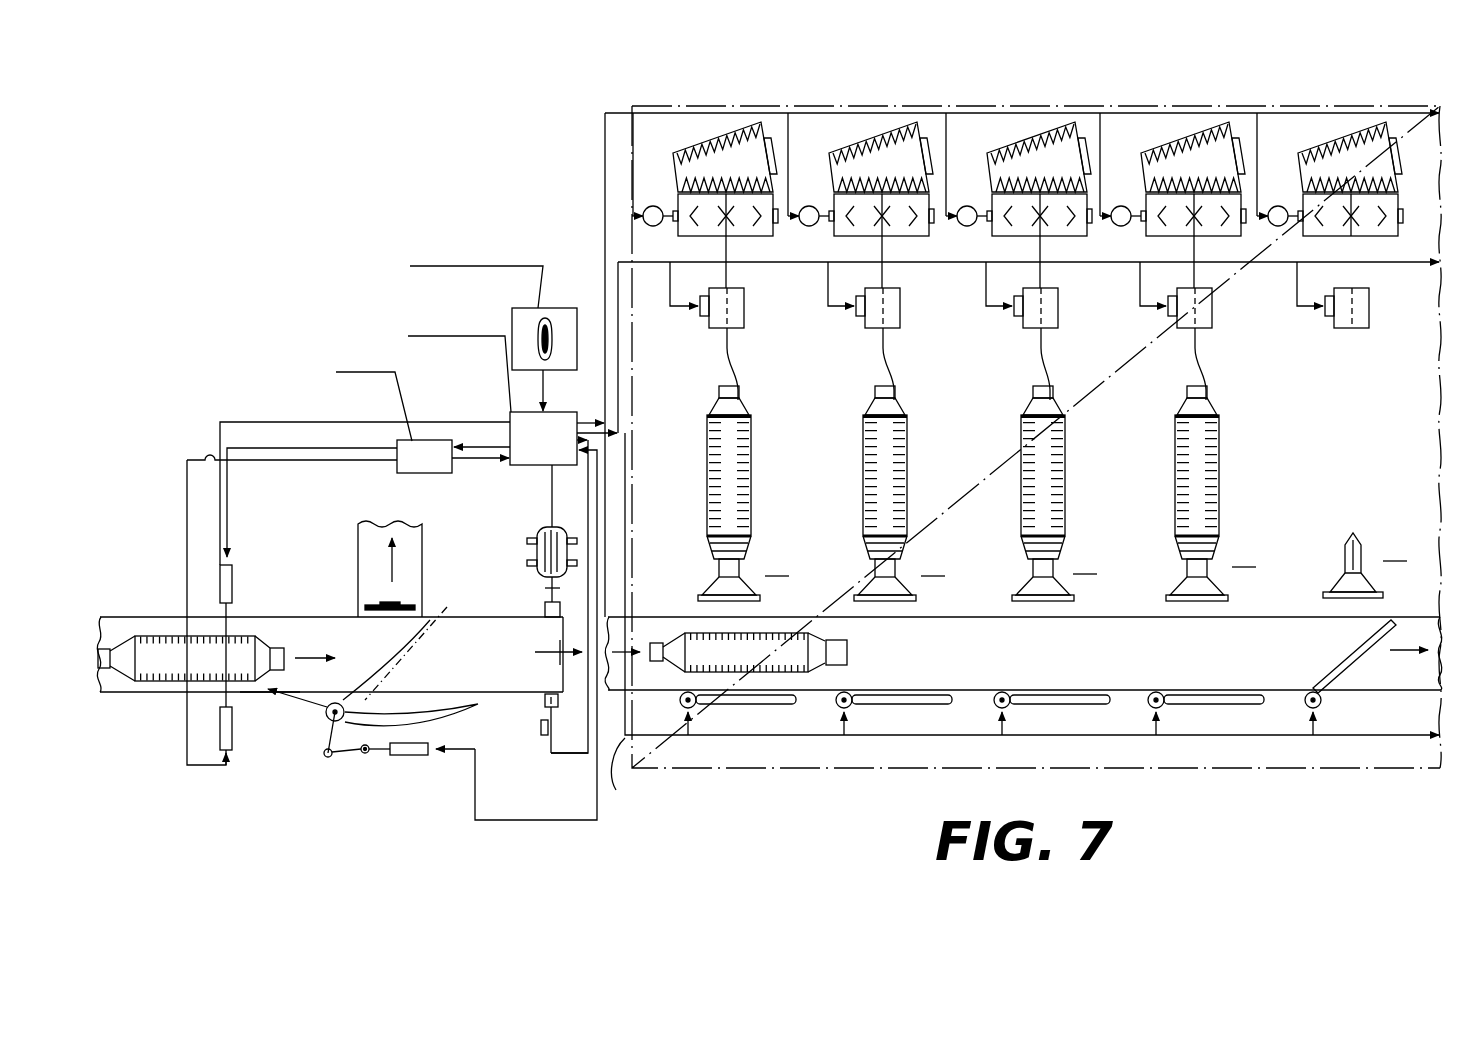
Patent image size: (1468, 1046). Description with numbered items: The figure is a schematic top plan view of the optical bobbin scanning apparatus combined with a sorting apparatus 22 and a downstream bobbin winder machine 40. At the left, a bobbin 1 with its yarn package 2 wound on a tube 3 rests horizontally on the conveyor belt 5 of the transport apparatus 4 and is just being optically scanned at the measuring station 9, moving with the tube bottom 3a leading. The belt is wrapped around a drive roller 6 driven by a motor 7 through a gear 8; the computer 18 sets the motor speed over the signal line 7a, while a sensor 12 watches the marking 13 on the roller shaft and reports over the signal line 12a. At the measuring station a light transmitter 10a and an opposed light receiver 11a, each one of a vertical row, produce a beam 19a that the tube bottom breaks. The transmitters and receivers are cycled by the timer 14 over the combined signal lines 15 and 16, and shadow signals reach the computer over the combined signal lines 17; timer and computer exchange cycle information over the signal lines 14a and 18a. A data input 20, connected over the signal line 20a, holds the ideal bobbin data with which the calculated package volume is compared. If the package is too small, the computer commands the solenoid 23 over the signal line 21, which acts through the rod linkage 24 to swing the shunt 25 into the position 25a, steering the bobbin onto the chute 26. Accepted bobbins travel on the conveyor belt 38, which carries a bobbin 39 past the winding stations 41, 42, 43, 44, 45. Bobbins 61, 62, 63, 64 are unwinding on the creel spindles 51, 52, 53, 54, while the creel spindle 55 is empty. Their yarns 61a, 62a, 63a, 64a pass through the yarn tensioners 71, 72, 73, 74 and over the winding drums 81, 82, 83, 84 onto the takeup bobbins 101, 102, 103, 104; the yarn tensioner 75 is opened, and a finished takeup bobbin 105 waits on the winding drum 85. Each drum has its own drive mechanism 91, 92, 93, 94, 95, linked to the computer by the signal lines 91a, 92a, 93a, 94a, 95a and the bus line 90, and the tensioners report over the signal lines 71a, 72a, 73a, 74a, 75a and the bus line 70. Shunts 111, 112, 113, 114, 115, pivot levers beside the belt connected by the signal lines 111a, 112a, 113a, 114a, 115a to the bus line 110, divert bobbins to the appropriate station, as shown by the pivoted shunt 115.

The bobbin 1 is at (241, 631).
The yarn package 2 is at (195, 658).
The tube 3 is at (112, 646).
The tube bottom 3a is at (289, 647).
The transport apparatus 4 is at (573, 695).
The conveyor belt 5 is at (152, 618).
The drive roller 6 is at (560, 613).
The motor 7 is at (561, 538).
The signal line 7a is at (553, 500).
The gear 8 is at (545, 589).
The measuring station 9 is at (266, 695).
The light transmitter 10a is at (233, 730).
The light receiver 11a is at (238, 584).
The sensor 12 is at (541, 736).
The signal line 12a is at (574, 755).
The marking 13 is at (545, 706).
The timer 14 is at (397, 471).
The signal line 14a is at (482, 461).
The combined signal lines 15 is at (187, 488).
The combined signal lines 16 is at (229, 522).
The combined signal lines 17 is at (362, 421).
The computer 18 is at (564, 418).
The signal line 18a is at (473, 443).
The beam 19a is at (221, 705).
The data input 20 is at (520, 309).
The signal line 20a is at (542, 389).
The signal line 21 is at (474, 814).
The sorting apparatus 22 is at (316, 702).
The solenoid 23 is at (407, 755).
The rod linkage 24 is at (334, 760).
The shunt 25 is at (470, 708).
The shunt position 25a is at (412, 644).
The chute 26 is at (416, 557).
The conveyor belt 38 is at (649, 621).
The bobbin 39 is at (857, 651).
The bobbin winder machine 40 is at (728, 782).
The winding station 41 is at (777, 565).
The winding station 42 is at (933, 565).
The winding station 43 is at (1085, 563).
The winding station 44 is at (1244, 556).
The winding station 45 is at (1368, 562).
The creel spindle 51 is at (760, 599).
The creel spindle 52 is at (916, 599).
The creel spindle 53 is at (1074, 599).
The creel spindle 54 is at (1228, 599).
The creel spindle 55 is at (1383, 597).
The bobbin 61 is at (742, 512).
The bobbin 62 is at (898, 505).
The bobbin 63 is at (1056, 500).
The bobbin 64 is at (1210, 485).
The yarn 61a is at (739, 388).
The yarn 62a is at (895, 388).
The yarn 63a is at (1041, 362).
The yarn 64a is at (1194, 362).
The bus line 70 is at (619, 352).
The yarn tensioner 71 is at (744, 327).
The yarn tensioner 72 is at (900, 327).
The yarn tensioner 73 is at (1058, 327).
The yarn tensioner 74 is at (1212, 327).
The yarn tensioner 75 is at (1369, 327).
The signal line 71a is at (668, 292).
The signal line 72a is at (828, 280).
The signal line 73a is at (986, 280).
The signal line 74a is at (1140, 280).
The signal line 75a is at (1297, 280).
The winding drum 81 is at (770, 237).
The winding drum 82 is at (926, 237).
The winding drum 83 is at (1084, 237).
The winding drum 84 is at (1238, 237).
The winding drum 85 is at (1395, 237).
The bus line 90 is at (605, 142).
The drive mechanism 91 is at (653, 206).
The drive mechanism 92 is at (809, 206).
The drive mechanism 93 is at (967, 206).
The drive mechanism 94 is at (1121, 206).
The drive mechanism 95 is at (1278, 206).
The signal line 91a is at (637, 122).
The signal line 92a is at (789, 130).
The signal line 93a is at (947, 130).
The signal line 94a is at (1101, 130).
The signal line 95a is at (1258, 130).
The takeup bobbin 101 is at (698, 146).
The takeup bobbin 102 is at (854, 146).
The takeup bobbin 103 is at (1012, 146).
The takeup bobbin 104 is at (1166, 146).
The takeup bobbin 105 is at (1323, 146).
The bus line 110 is at (1025, 620).
The shunt 111 is at (762, 706).
The shunt 112 is at (918, 706).
The shunt 113 is at (1076, 706).
The shunt 114 is at (1230, 706).
The shunt 115 is at (1360, 655).
The signal line 111a is at (712, 722).
The signal line 112a is at (868, 722).
The signal line 113a is at (1026, 722).
The signal line 114a is at (1180, 722).
The signal line 115a is at (1337, 722).